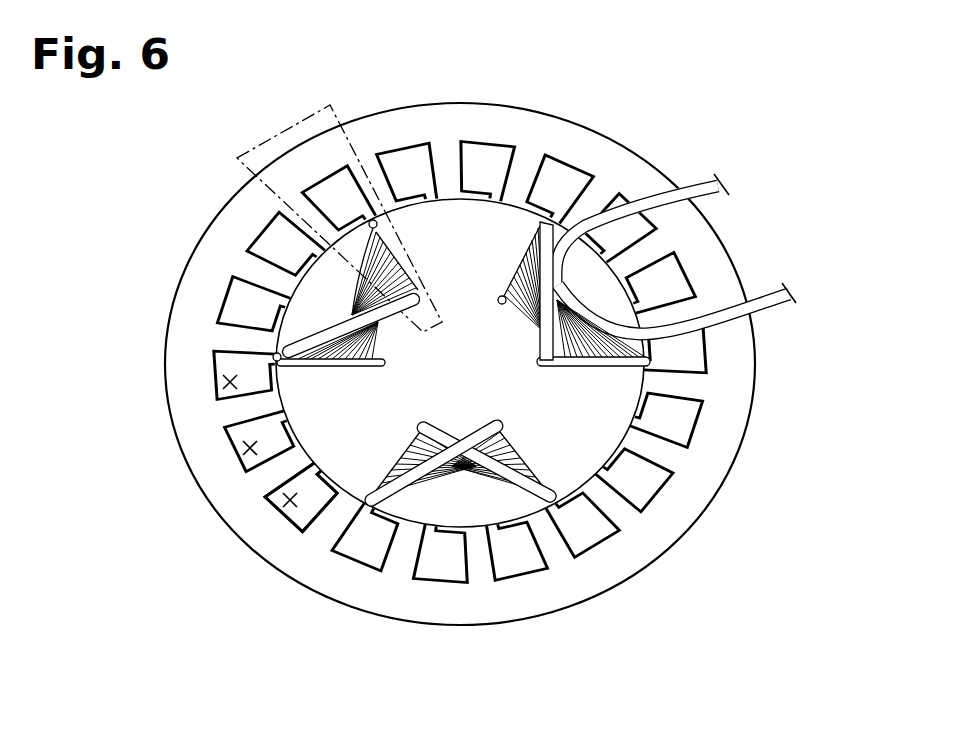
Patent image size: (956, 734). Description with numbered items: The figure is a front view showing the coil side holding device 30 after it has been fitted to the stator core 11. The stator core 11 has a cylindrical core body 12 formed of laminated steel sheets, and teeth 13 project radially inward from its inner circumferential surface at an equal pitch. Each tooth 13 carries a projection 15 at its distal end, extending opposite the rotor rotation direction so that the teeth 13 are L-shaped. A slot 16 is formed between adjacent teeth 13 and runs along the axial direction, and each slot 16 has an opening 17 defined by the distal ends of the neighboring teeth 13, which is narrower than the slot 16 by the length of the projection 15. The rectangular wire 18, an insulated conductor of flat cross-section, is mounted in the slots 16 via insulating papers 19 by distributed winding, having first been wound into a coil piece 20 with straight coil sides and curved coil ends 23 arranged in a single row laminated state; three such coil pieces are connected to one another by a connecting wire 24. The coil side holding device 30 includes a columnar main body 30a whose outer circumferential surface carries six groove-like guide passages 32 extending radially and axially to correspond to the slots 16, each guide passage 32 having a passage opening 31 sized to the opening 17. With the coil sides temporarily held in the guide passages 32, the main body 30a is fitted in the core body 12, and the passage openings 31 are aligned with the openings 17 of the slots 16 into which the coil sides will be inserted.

The stator core 11 is at (752, 374).
The core body 12 is at (730, 437).
The teeth 13 is at (632, 500).
The projection 15 is at (318, 502).
The slot 16 is at (283, 500).
The opening 17 is at (482, 200).
The rectangular wire 18 is at (483, 460).
The insulating papers 19 is at (610, 560).
The coil piece 20 is at (468, 456).
The coil ends 23 is at (540, 318).
The connecting wire 24 is at (785, 295).
The coil side holding device 30 is at (294, 293).
The main body 30a is at (307, 300).
The passage opening 31 is at (540, 224).
The guide passages 32 is at (424, 297).